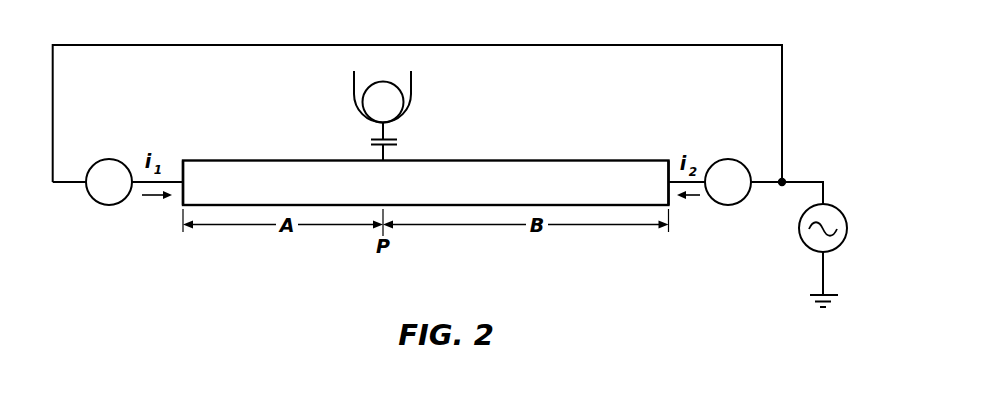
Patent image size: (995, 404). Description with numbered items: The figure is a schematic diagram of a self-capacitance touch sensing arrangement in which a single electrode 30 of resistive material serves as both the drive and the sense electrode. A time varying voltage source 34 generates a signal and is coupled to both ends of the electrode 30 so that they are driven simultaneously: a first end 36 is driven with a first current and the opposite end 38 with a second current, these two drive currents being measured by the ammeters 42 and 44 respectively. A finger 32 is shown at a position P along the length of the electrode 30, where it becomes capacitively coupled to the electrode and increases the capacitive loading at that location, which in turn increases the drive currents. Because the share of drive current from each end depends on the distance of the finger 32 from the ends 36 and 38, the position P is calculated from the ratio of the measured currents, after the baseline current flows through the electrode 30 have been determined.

The electrode 30 is at (597, 168).
The finger 32 is at (411, 88).
The time varying voltage source 34 is at (840, 208).
The first end 36 is at (183, 160).
The opposite end 38 is at (667, 160).
The ammeter 42 is at (110, 205).
The ammeter 44 is at (723, 205).